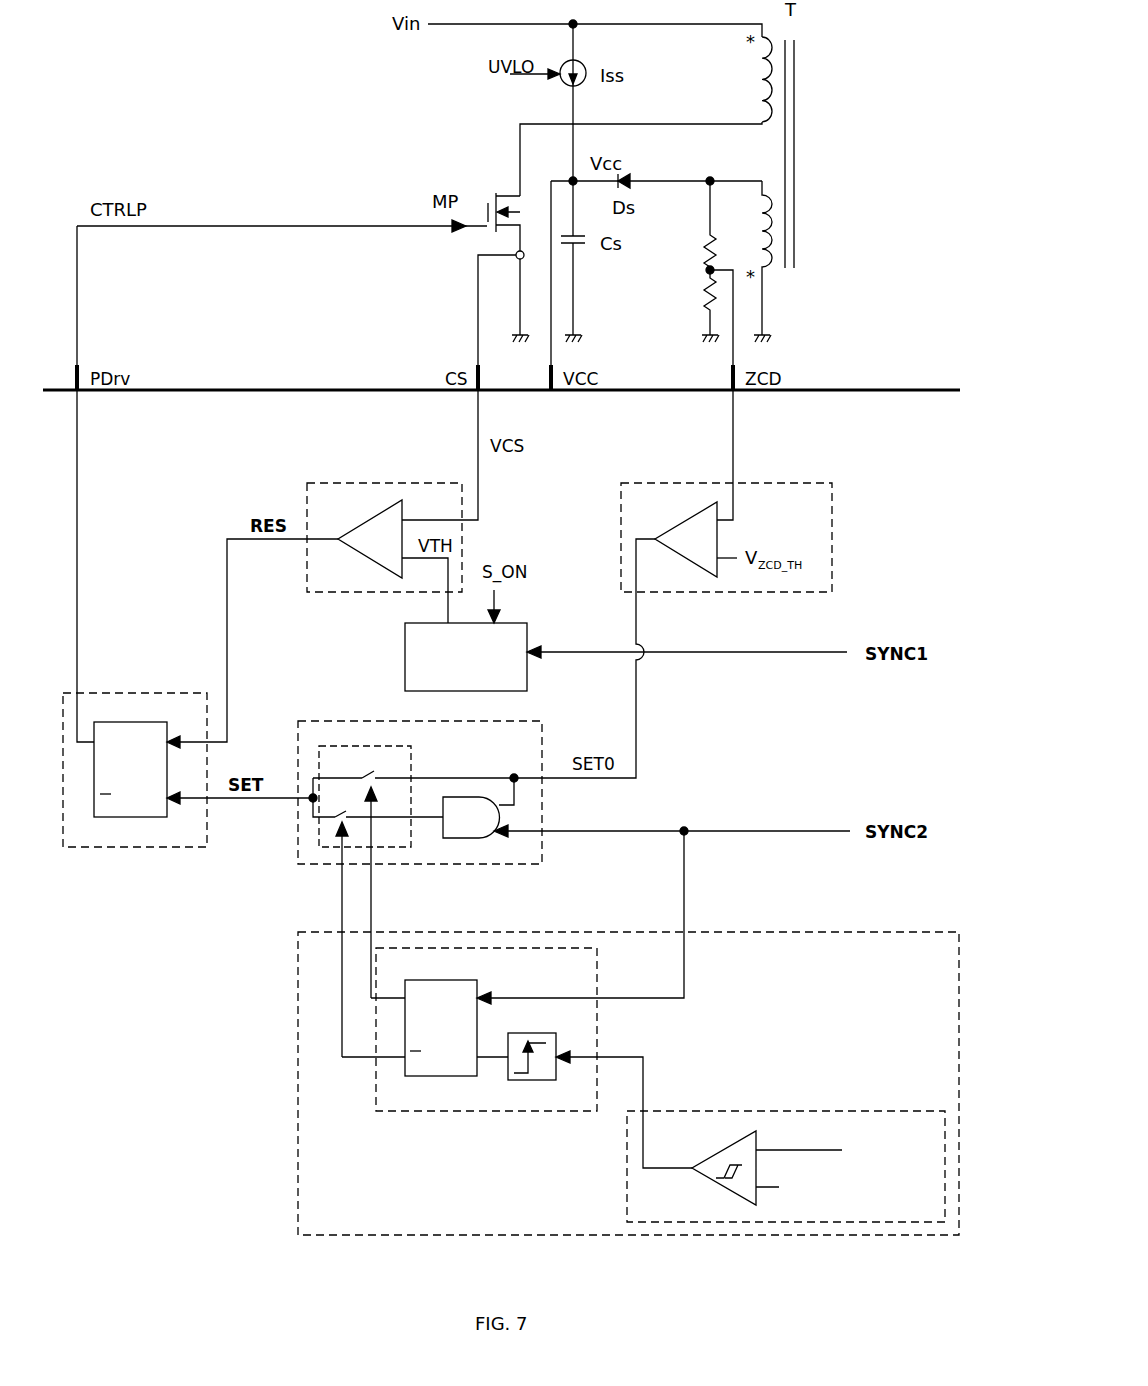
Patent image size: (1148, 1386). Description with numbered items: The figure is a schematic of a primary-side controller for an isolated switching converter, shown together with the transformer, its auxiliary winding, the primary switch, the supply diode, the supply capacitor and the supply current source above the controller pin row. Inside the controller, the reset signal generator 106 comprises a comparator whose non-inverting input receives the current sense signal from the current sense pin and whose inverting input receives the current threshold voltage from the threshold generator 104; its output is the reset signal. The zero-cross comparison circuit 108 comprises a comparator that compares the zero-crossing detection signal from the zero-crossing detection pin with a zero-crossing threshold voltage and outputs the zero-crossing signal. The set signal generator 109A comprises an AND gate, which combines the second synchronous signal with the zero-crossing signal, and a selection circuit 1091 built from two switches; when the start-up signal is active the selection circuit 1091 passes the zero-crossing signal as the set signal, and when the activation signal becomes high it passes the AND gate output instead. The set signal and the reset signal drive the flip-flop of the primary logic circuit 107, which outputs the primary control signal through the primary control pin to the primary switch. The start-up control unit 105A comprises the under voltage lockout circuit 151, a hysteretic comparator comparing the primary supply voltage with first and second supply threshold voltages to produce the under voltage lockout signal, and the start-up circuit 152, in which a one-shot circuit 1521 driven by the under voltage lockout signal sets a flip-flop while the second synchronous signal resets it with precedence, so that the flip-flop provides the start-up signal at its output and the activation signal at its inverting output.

The threshold generator 104 is at (405, 668).
The reset signal generator 106 is at (308, 592).
The primary logic circuit 107 is at (128, 847).
The zero-cross comparison circuit 108 is at (832, 540).
The set signal generator 109A is at (459, 798).
The selection circuit 1091 is at (411, 774).
The start-up control unit 105A is at (595, 1072).
The under voltage lockout circuit 151 is at (627, 1189).
The start-up circuit 152 is at (469, 1048).
The one-shot circuit 1521 is at (529, 1080).